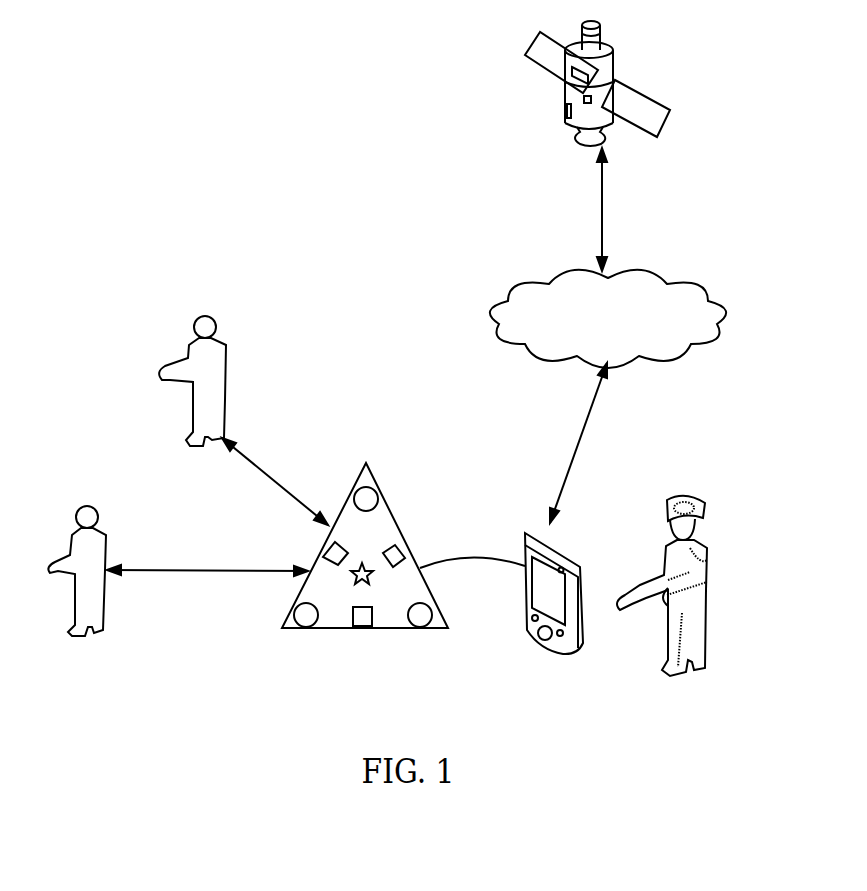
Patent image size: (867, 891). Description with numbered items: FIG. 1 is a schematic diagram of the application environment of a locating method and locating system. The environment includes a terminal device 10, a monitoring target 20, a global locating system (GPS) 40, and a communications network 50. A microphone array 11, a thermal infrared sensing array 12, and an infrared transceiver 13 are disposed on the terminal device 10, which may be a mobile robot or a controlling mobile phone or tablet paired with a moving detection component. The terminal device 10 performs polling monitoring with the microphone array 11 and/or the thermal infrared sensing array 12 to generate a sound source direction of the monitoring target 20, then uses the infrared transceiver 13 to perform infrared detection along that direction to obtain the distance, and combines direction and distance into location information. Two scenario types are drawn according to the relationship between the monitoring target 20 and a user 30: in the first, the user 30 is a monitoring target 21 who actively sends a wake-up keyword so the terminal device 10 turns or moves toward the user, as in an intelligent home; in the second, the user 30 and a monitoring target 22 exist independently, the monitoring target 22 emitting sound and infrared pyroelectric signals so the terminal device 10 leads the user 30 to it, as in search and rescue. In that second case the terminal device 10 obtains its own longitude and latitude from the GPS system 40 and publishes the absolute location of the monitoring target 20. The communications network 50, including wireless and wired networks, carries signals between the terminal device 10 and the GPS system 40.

The terminal device 10 is at (563, 543).
The microphone array 11 is at (377, 491).
The thermal infrared sensing array 12 is at (362, 622).
The infrared transceiver 13 is at (363, 565).
The monitoring target 20 is at (120, 418).
The monitoring target 21 is at (102, 532).
The monitoring target 22 is at (162, 375).
The user 30 is at (710, 553).
The global locating system (GPS) 40 is at (650, 97).
The communications network 50 is at (710, 303).